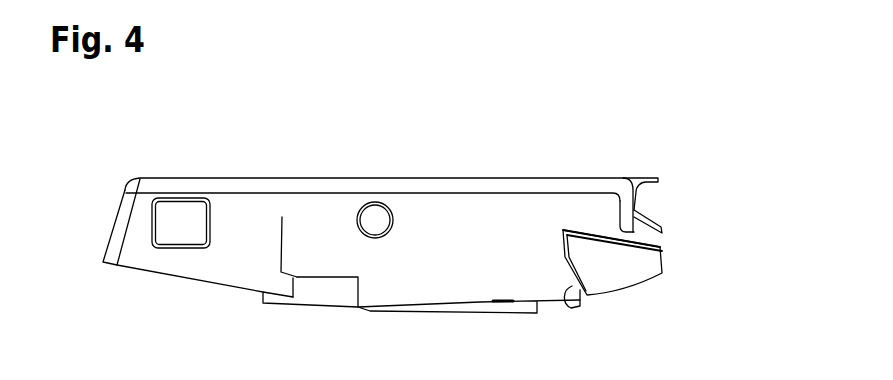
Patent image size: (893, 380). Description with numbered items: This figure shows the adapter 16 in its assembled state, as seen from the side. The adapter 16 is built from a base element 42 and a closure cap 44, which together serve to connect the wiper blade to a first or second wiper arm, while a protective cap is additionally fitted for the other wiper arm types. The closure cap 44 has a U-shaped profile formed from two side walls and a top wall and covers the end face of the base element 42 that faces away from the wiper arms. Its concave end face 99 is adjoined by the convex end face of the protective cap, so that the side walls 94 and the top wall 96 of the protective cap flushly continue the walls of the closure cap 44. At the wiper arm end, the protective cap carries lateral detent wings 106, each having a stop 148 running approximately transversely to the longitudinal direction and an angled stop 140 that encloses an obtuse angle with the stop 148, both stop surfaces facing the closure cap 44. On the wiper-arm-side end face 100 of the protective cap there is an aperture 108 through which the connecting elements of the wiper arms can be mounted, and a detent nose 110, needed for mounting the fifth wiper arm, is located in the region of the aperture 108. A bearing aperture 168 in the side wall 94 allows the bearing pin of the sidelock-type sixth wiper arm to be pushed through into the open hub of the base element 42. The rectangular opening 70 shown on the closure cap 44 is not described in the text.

The adapter 16 is at (414, 160).
The base element 42 is at (325, 290).
The closure cap 44 is at (137, 234).
The rectangular opening 70 is at (183, 215).
The side wall 94 is at (510, 222).
The top wall 96 is at (345, 188).
The end face 99 is at (303, 232).
The end face 100 is at (667, 216).
The detent wing 106 is at (628, 267).
The aperture 108 is at (643, 200).
The detent nose 110 is at (653, 237).
The angled stop 140 is at (572, 306).
The stop 148 is at (563, 245).
The bearing aperture 168 is at (376, 223).